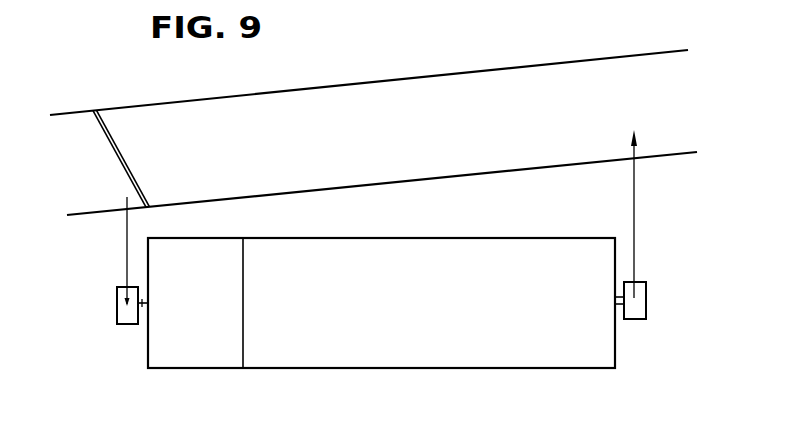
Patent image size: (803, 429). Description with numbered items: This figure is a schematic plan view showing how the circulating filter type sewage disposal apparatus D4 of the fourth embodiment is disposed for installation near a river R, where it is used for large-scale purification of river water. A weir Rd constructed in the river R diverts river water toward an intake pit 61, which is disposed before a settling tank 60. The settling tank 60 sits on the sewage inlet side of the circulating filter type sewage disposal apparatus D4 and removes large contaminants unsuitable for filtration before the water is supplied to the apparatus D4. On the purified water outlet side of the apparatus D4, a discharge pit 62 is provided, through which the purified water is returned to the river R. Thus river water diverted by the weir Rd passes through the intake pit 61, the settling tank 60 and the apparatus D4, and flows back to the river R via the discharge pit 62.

The river R is at (500, 83).
The weir Rd is at (120, 162).
The settling tank 60 is at (170, 344).
The intake pit 61 is at (117, 315).
The discharge pit 62 is at (639, 302).
The circulating filter type sewage disposal apparatus D4 is at (587, 347).